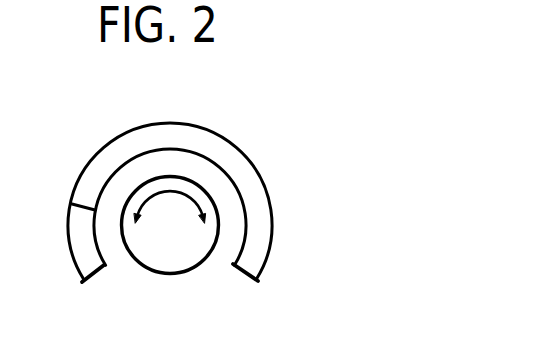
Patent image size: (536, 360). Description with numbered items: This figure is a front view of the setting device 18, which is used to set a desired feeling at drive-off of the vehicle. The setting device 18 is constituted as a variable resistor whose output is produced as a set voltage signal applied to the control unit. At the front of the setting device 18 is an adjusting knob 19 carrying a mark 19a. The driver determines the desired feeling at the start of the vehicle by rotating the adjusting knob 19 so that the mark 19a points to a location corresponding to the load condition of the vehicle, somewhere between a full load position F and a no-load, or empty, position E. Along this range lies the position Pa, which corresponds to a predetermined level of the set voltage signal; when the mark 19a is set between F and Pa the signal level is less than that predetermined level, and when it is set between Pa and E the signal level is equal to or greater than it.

The setting device 18 is at (195, 194).
The adjusting knob 19 is at (173, 258).
The mark 19a is at (132, 203).
The position Pa is at (72, 204).
The full load position F is at (78, 285).
The no-load (empty) position E is at (258, 283).